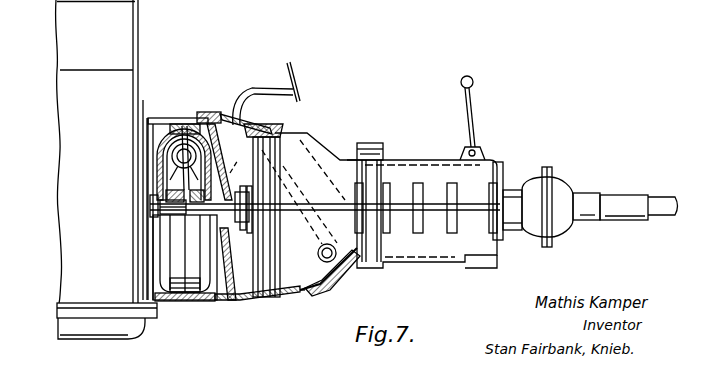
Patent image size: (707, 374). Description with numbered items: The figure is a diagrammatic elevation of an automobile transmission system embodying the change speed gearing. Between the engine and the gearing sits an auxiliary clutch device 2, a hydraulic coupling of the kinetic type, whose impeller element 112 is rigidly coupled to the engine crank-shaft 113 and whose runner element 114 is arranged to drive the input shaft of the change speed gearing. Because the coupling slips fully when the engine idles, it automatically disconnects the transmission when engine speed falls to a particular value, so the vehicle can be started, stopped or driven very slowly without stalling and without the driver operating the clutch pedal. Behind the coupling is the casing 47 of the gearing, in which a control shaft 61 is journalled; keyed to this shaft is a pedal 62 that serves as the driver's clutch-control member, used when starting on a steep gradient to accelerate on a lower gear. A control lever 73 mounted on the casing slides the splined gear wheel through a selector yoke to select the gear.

The auxiliary clutch device 2 is at (168, 118).
The impeller element 112 is at (205, 116).
The runner element 114 is at (160, 152).
The engine crank-shaft 113 is at (152, 205).
The pedal 62 is at (293, 88).
The casing 47 is at (425, 160).
The control lever 73 is at (476, 136).
The control shaft 61 is at (330, 262).